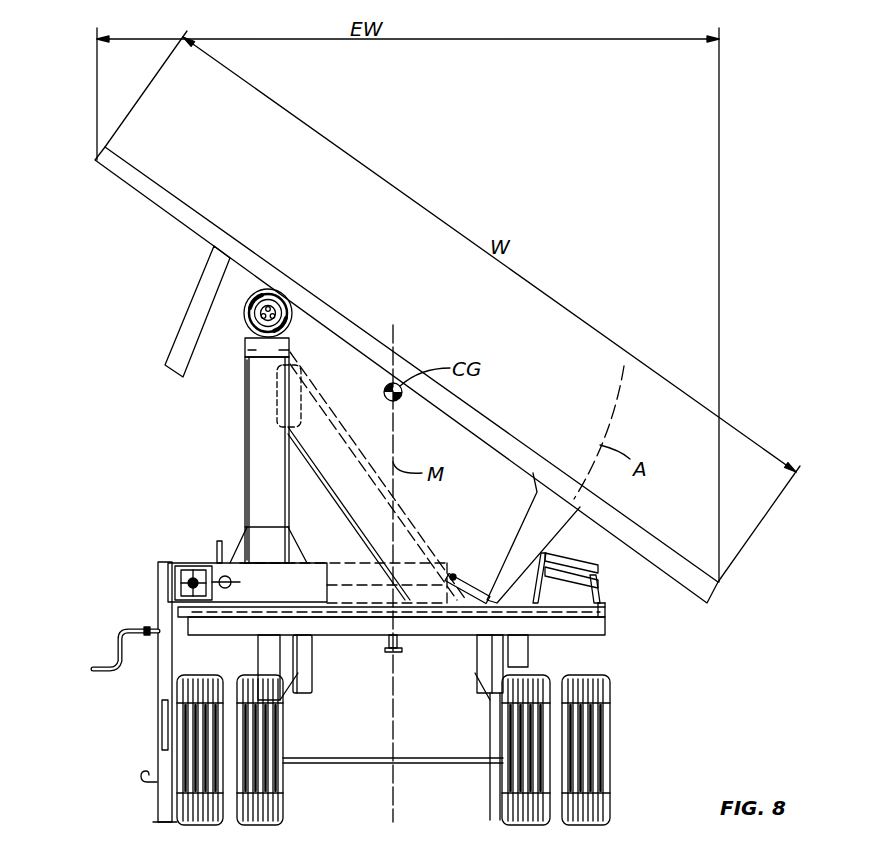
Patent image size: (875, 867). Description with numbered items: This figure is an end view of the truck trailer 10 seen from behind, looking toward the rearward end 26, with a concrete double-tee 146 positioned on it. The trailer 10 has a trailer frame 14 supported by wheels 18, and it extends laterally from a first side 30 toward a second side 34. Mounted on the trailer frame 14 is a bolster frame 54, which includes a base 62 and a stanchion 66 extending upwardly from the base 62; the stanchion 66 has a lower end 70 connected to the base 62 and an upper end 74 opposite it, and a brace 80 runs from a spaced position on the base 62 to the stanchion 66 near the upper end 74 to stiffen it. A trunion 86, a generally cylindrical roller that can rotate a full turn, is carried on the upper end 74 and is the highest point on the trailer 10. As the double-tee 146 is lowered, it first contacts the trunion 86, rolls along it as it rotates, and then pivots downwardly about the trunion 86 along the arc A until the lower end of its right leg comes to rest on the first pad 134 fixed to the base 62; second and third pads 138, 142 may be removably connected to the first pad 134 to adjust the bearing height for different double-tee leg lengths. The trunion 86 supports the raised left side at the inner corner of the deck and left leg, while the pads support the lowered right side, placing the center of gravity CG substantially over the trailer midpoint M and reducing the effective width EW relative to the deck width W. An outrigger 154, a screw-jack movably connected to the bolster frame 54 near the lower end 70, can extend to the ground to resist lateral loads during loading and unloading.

The truck trailer 10 is at (774, 342).
The trailer frame 14 is at (590, 642).
The wheels 18 is at (205, 826).
The rearward end 26 is at (200, 625).
The first side 30 is at (178, 612).
The second side 34 is at (600, 626).
The bolster frame 54 is at (240, 447).
The base 62 is at (328, 607).
The stanchion 66 is at (245, 486).
The lower end 70 is at (225, 570).
The upper end 74 is at (257, 352).
The third brace 80 is at (362, 513).
The trunion 86 is at (244, 310).
The first pad 134 is at (465, 600).
The second pad 138 is at (596, 568).
The third pad 142 is at (610, 590).
The concrete double-tee 146 is at (256, 254).
The outrigger 154 is at (160, 725).